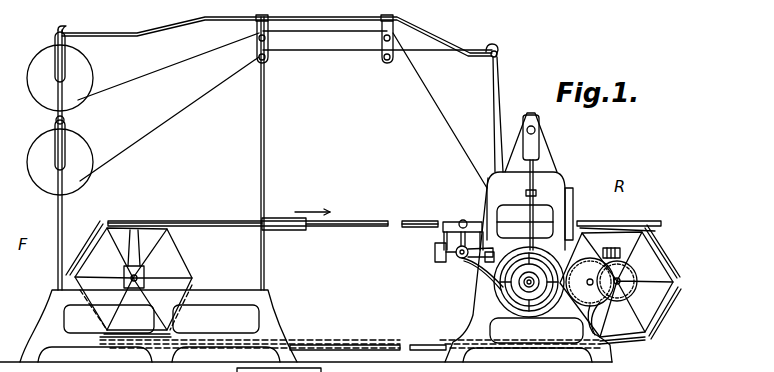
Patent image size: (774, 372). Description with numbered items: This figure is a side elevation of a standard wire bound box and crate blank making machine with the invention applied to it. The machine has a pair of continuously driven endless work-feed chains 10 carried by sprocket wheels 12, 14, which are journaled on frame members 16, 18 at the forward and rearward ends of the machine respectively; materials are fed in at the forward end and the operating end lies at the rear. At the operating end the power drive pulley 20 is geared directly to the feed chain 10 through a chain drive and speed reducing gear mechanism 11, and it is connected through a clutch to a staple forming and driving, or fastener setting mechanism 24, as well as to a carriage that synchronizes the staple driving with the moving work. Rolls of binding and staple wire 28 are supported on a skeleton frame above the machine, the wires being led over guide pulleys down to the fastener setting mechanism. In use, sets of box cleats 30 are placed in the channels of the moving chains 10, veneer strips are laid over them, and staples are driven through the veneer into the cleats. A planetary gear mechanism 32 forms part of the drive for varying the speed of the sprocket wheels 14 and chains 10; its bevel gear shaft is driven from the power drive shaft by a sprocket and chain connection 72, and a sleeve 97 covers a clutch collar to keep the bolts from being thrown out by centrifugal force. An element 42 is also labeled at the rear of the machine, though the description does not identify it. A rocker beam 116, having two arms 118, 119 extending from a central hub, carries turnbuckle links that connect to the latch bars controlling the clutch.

The work-feed chains 10 is at (384, 221).
The chain drive and speed reducing gear mechanism 11 is at (568, 302).
The sprocket wheel 12 is at (168, 262).
The sprocket wheel 14 is at (646, 272).
The frame member 16 is at (50, 316).
The frame member 18 is at (597, 350).
The power drive pulley 20 is at (496, 292).
The fastener setting mechanism 24 is at (483, 358).
The rolls of binding and staple wire 28 is at (73, 104).
The box cleats 30 is at (645, 228).
The planetary gear mechanism 32 is at (667, 286).
The gear block 42 is at (616, 250).
The sprocket and chain connection 72 is at (476, 267).
The sleeve 97 is at (440, 262).
The rocker beam 116 is at (470, 216).
The arm 118 is at (260, 368).
The arm 119 is at (345, 358).